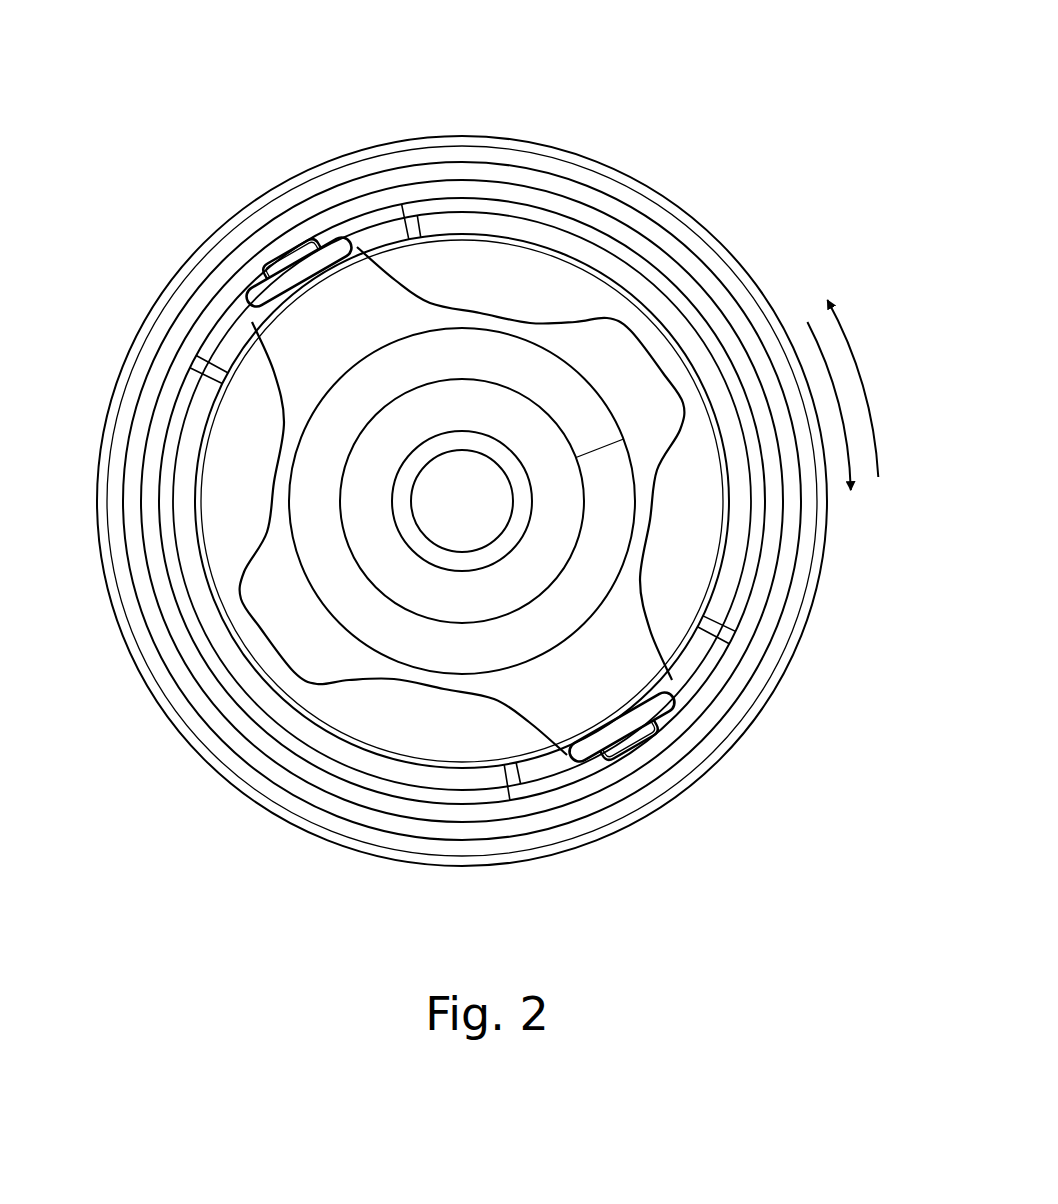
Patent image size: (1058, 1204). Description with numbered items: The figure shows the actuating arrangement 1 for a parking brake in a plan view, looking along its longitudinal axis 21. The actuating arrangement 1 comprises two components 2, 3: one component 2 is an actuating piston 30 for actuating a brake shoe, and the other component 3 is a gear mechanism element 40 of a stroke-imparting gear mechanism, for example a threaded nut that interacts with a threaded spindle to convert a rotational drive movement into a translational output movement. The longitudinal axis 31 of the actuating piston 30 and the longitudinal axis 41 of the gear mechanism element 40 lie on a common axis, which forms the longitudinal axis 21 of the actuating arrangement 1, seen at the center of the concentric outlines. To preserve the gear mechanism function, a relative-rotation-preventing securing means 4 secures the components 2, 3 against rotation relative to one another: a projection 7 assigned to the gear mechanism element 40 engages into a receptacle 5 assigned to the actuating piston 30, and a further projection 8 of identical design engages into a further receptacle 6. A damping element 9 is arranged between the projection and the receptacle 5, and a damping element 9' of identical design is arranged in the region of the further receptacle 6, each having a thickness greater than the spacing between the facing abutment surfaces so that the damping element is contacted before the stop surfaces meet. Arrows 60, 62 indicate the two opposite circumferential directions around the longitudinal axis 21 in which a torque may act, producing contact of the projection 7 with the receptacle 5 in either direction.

The actuating arrangement 1 is at (608, 128).
The component 2 is at (473, 483).
The actuating piston 30 is at (694, 257).
The component 3 is at (392, 452).
The gear mechanism element 40 is at (392, 452).
The relative-rotation-preventing securing means 4 is at (362, 238).
The receptacle 5 is at (662, 712).
The further receptacle 6 is at (340, 233).
The projection 7 is at (633, 740).
The further projection 8 is at (285, 257).
The damping element 9 is at (693, 726).
The damping element 9' is at (198, 253).
The longitudinal axis 21 is at (306, 661).
The longitudinal axis 31 is at (306, 661).
The longitudinal axis 41 is at (462, 501).
The arrow 60 is at (857, 474).
The arrow 62 is at (870, 417).